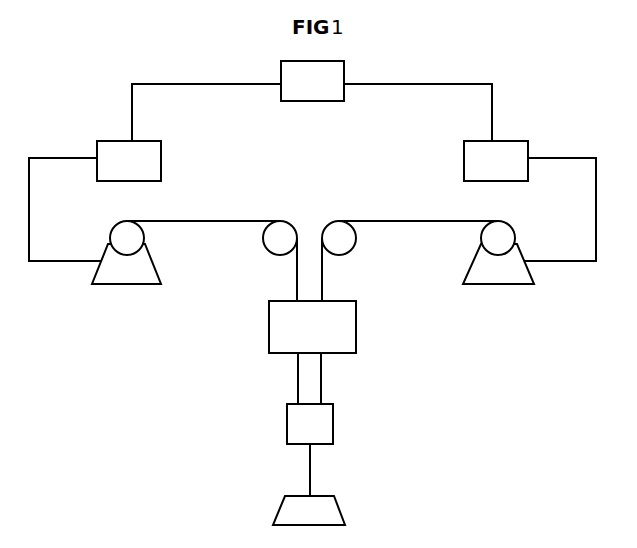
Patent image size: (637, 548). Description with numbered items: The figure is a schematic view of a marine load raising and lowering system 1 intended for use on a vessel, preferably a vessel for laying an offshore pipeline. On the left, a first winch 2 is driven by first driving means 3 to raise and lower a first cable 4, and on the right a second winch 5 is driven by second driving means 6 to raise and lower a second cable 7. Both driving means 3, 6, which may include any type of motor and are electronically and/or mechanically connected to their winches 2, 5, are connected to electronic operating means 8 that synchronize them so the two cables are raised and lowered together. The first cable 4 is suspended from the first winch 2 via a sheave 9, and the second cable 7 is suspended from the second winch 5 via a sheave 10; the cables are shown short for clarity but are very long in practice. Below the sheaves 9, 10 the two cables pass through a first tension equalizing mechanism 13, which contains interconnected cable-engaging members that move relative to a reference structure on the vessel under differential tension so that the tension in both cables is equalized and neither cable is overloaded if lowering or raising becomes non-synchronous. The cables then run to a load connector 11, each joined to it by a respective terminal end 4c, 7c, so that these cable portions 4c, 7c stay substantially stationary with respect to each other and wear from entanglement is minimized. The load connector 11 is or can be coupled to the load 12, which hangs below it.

The marine load raising and lowering system 1 is at (312, 293).
The first winch 2 is at (116, 272).
The first driving means 3 is at (115, 153).
The first cable 4 is at (223, 219).
The terminal end of the first cable 4c is at (297, 377).
The second winch 5 is at (515, 272).
The second driving means 6 is at (503, 148).
The second cable 7 is at (430, 221).
The terminal end of the second cable 7c is at (322, 381).
The operating means 8 is at (327, 89).
The sheave 9 is at (282, 225).
The sheave 10 is at (337, 233).
The load connector 11 is at (320, 427).
The load 12 is at (293, 512).
The first tension equalizing mechanism 13 is at (282, 335).